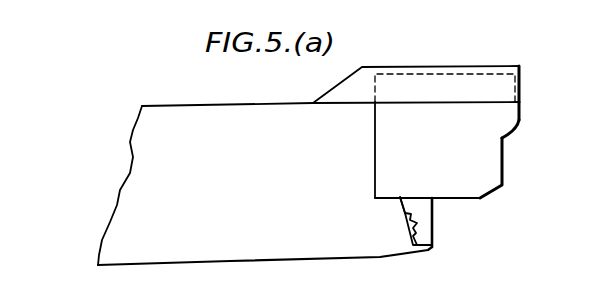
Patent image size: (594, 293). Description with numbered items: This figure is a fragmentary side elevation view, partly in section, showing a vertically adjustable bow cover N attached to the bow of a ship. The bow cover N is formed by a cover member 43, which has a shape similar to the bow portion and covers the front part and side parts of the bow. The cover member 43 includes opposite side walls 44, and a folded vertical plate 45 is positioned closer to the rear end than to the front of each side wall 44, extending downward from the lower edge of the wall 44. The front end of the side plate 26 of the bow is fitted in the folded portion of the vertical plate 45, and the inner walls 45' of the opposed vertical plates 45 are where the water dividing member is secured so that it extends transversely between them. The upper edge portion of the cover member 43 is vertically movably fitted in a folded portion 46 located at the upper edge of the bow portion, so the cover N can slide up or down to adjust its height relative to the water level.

The side plate 26 is at (308, 197).
The cover member 43 is at (493, 170).
The side wall 44 is at (375, 166).
The folded vertical plate 45 is at (456, 222).
The inner wall 45' is at (390, 221).
The folded portion 46 is at (507, 90).
The bow cover N is at (502, 132).